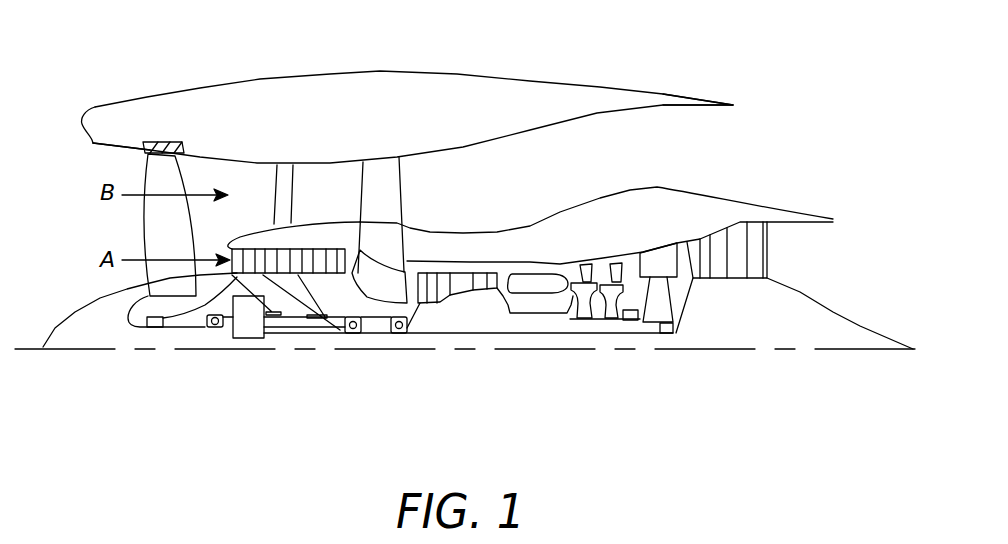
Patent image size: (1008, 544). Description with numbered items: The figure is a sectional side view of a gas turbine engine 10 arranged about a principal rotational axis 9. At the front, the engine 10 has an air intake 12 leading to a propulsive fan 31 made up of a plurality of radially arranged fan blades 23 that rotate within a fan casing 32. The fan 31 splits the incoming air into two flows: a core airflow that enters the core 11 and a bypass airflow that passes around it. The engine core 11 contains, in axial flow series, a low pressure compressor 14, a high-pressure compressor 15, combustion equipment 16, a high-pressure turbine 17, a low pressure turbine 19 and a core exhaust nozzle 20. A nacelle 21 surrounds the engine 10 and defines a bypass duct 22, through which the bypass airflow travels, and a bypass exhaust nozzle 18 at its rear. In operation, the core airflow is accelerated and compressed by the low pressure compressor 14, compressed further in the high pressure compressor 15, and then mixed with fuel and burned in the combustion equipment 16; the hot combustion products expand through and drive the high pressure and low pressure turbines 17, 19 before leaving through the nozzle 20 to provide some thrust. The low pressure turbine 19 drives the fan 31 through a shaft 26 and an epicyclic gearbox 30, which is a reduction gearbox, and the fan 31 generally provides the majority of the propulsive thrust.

The principal rotational axis 9 is at (773, 350).
The gas turbine engine 10 is at (145, 95).
The core 11 is at (509, 241).
The air intake 12 is at (94, 172).
The low pressure compressor 14 is at (318, 252).
The high-pressure compressor 15 is at (464, 285).
The combustion equipment 16 is at (537, 287).
The high-pressure turbine 17 is at (600, 268).
The bypass exhaust nozzle 18 is at (720, 144).
The low pressure turbine 19 is at (737, 240).
The core exhaust nozzle 20 is at (793, 252).
The nacelle 21 is at (375, 92).
The bypass duct 22 is at (665, 161).
The fan blades 23 is at (150, 229).
The shaft 26 is at (455, 338).
The epicyclic gearbox 30 is at (244, 328).
The propulsive fan 31 is at (93, 246).
The fan casing 32 is at (166, 140).